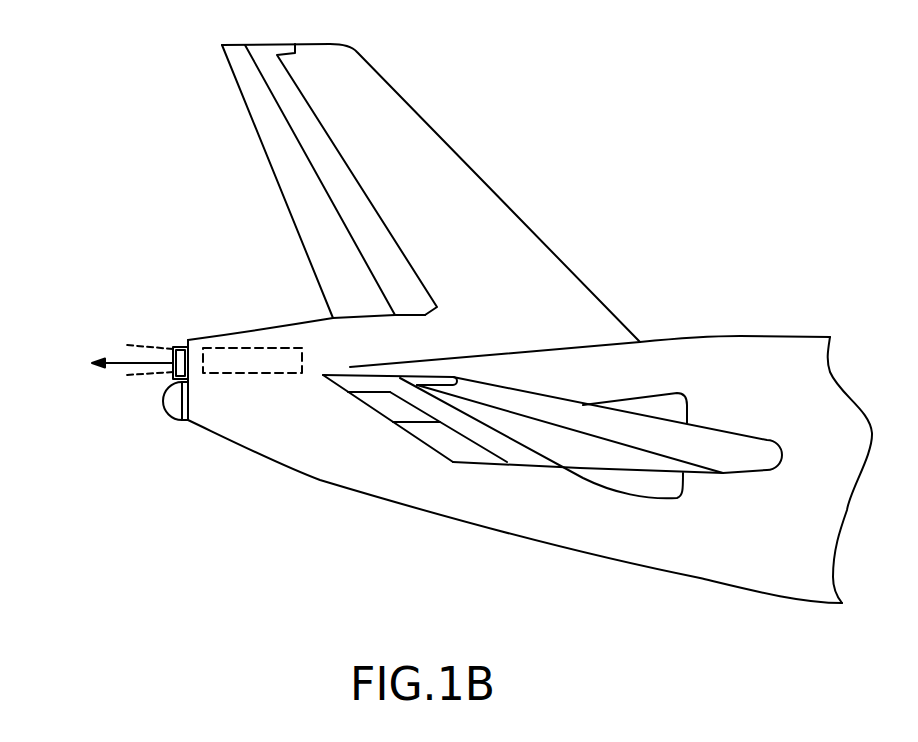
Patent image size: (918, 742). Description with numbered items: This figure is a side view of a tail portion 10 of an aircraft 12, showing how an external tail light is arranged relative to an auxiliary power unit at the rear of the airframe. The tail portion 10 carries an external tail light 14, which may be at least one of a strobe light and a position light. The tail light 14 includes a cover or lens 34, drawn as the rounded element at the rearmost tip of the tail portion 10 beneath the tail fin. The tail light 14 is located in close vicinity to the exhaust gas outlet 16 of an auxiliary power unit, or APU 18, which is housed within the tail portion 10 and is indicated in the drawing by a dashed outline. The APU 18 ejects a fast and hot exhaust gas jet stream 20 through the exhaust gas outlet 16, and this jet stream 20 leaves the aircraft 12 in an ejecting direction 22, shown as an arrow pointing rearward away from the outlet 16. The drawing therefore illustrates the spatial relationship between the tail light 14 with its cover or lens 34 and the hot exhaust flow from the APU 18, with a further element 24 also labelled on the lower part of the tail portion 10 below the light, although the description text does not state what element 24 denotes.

The tail portion 10 is at (698, 178).
The aircraft 12 is at (747, 383).
The external tail light 14 is at (128, 418).
The exhaust gas outlet 16 is at (203, 356).
The auxiliary power unit 18 is at (253, 354).
The exhaust gas jet stream 20 is at (146, 348).
The ejecting direction 22 is at (131, 358).
The tail cone 24 is at (176, 438).
The cover or lens 34 is at (158, 402).